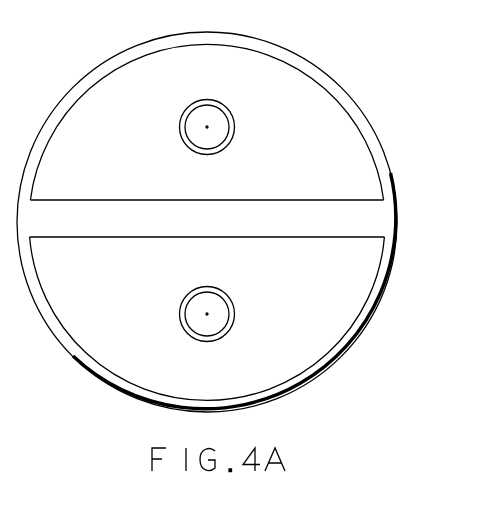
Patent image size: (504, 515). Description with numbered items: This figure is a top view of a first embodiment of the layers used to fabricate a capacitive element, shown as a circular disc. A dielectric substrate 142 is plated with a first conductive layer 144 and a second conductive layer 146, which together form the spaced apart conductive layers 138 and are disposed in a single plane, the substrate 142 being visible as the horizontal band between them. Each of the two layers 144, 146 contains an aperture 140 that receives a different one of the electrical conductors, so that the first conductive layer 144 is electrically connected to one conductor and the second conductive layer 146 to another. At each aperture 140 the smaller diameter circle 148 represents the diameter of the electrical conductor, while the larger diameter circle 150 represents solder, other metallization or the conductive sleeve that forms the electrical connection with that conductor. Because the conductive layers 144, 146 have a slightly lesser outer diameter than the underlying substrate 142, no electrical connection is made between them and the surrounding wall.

The conductive layers 138 is at (437, 22).
The apertures 140 is at (217, 127).
The dielectric substrate 142 is at (375, 218).
The first conductive layer 144 is at (350, 142).
The second conductive layer 146 is at (363, 264).
The smaller diameter circle 148 is at (188, 135).
The larger diameter circle 150 is at (158, 85).